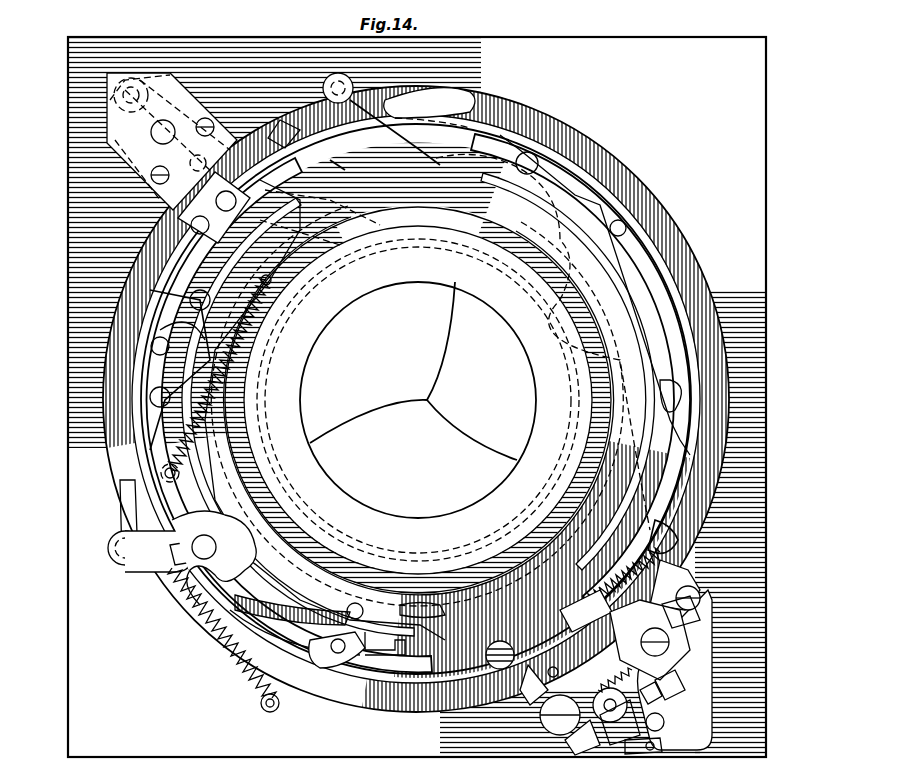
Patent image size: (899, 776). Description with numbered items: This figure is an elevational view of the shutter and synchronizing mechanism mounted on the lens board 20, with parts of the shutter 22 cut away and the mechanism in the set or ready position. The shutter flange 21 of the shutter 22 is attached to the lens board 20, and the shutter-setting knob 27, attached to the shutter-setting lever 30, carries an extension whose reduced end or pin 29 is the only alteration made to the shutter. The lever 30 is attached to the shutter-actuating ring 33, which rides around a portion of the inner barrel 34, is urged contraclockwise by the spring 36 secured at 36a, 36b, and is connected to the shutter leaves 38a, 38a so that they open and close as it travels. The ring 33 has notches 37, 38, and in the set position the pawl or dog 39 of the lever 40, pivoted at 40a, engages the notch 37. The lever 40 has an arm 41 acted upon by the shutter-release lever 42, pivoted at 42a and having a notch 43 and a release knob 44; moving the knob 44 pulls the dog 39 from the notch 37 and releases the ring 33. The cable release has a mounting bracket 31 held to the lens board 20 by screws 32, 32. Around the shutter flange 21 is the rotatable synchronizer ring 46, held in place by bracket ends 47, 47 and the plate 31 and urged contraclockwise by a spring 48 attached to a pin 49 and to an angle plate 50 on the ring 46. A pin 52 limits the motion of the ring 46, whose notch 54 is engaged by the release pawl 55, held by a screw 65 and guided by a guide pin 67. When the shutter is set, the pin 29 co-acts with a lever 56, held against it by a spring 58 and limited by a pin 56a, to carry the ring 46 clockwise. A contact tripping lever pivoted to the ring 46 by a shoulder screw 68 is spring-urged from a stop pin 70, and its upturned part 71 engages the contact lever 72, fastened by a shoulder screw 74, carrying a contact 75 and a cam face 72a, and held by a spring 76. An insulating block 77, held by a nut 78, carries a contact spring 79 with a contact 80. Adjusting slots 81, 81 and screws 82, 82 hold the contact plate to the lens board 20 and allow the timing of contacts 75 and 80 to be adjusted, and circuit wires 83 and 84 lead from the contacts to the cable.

The lens board 20 is at (751, 45).
The shutter flange 21 is at (605, 494).
The shutter 22 is at (620, 198).
The shutter-setting knob 27 is at (340, 72).
The reduced end or pin 29 is at (330, 80).
The shutter-setting lever 30 is at (372, 90).
The attachment plate or mounting bracket 31 is at (160, 78).
The screws 32 is at (215, 118).
The shutter-actuating ring 33 is at (604, 388).
The inner barrel 34 is at (452, 228).
The spring 36 is at (220, 410).
The spring securing point 36a is at (270, 282).
The spring securing point 36b is at (165, 474).
The notch 37 is at (412, 600).
The notch 38 is at (445, 598).
The shutter leaves 38a is at (460, 335).
The pawl or dog 39 is at (398, 640).
The lever 40 is at (285, 608).
The pivot 40a is at (350, 604).
The arm 41 is at (245, 618).
The shutter-release lever 42 is at (138, 572).
The pivot 42a is at (200, 550).
The notch 43 is at (258, 585).
The release knob 44 is at (115, 560).
The shutter-synchronizing ring or synchronizer 46 is at (667, 224).
The bracket ends 47 is at (525, 695).
The spring 48 is at (225, 660).
The pin 49 is at (260, 708).
The angle plate 50 is at (140, 514).
The pin 52 is at (395, 95).
The notch 54 is at (450, 92).
The release pawl 55 is at (118, 112).
The lever 56 is at (322, 225).
The pin 56a is at (288, 118).
The spring 58 is at (280, 195).
The screw 65 is at (112, 96).
The guide pin 67 is at (120, 150).
The shoulder screw 68 is at (488, 650).
The stop pin 70 is at (665, 548).
The upturned part 71 is at (598, 605).
The contact lever 72 is at (640, 615).
The cam face 72a is at (690, 618).
The shoulder screw 74 is at (669, 648).
The contact 75 is at (672, 686).
The spring 76 is at (625, 700).
The insulating block 77 is at (570, 745).
The nut 78 is at (652, 708).
The contact spring 79 is at (612, 740).
The contact 80 is at (662, 698).
The adjusting slots 81 is at (712, 612).
The screws 82 is at (700, 600).
The circuit wire 83 is at (650, 752).
The circuit wire 84 is at (572, 735).